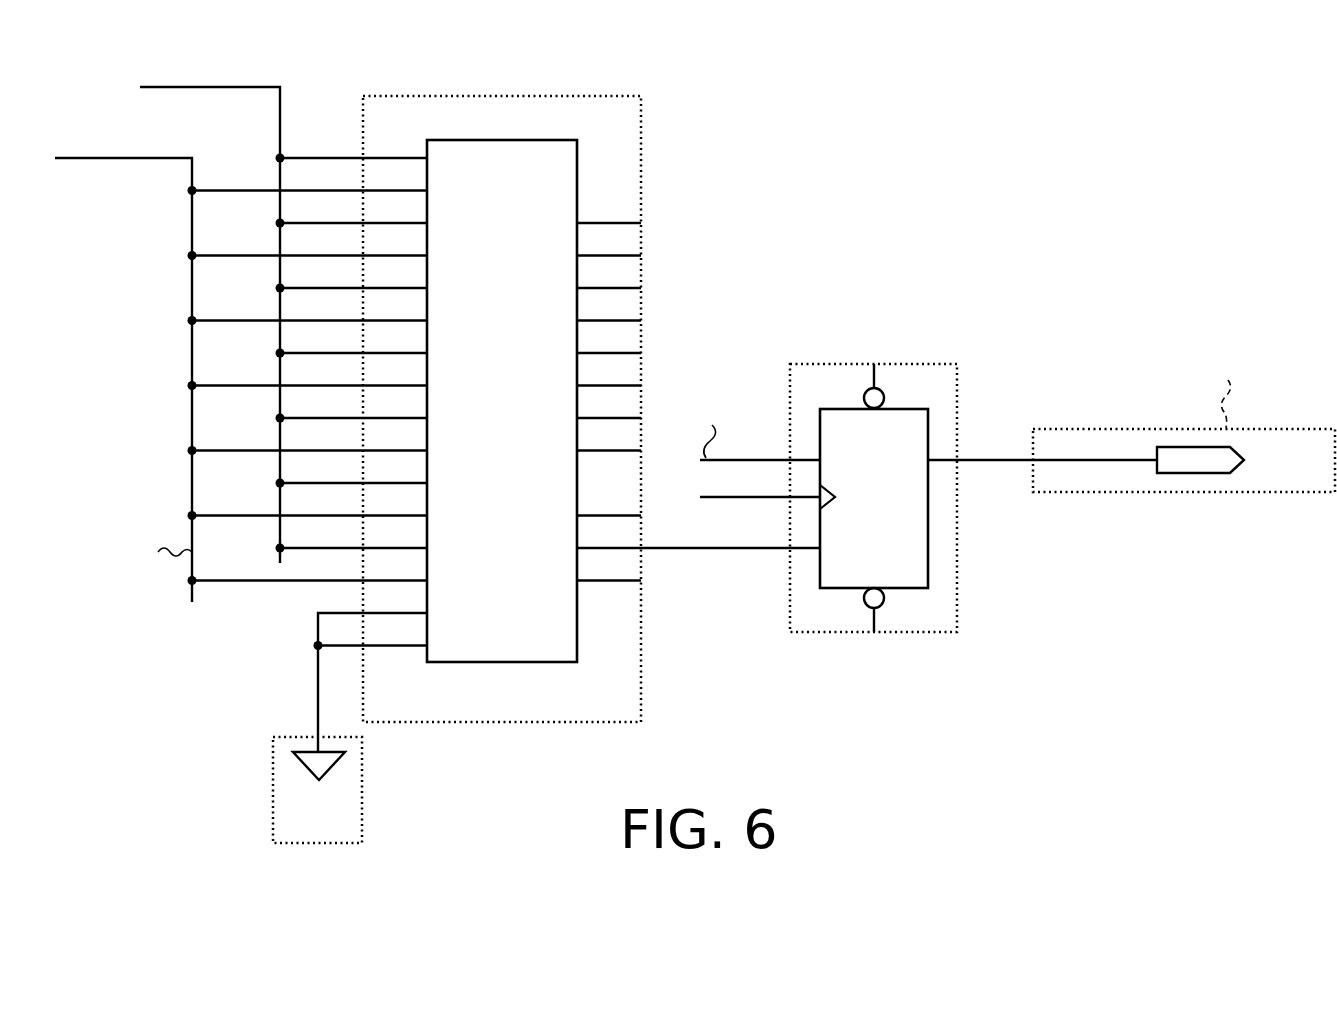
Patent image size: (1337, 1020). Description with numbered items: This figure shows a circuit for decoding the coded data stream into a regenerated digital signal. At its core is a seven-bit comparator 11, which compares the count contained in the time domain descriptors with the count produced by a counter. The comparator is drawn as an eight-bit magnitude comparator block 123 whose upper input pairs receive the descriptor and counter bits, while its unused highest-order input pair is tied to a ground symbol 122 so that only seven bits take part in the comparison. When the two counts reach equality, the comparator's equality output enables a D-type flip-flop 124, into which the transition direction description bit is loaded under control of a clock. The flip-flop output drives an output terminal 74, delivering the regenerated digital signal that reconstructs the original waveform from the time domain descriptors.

The 7-bit comparator 11 is at (437, 404).
The 8-bit magnitude comparator (8mcomp) 123 is at (567, 431).
The ground connection 122 is at (317, 790).
The D flip-flop with enable (DFFE) 124 is at (828, 498).
The FSKO output 74 is at (1131, 423).